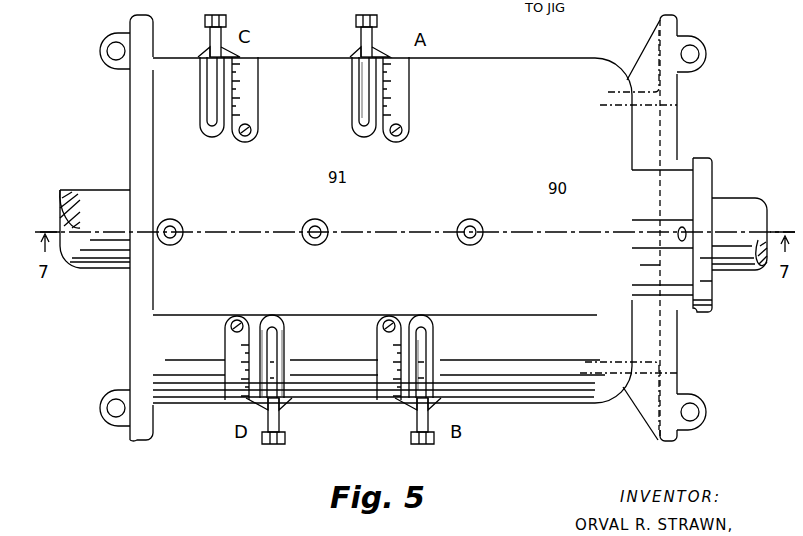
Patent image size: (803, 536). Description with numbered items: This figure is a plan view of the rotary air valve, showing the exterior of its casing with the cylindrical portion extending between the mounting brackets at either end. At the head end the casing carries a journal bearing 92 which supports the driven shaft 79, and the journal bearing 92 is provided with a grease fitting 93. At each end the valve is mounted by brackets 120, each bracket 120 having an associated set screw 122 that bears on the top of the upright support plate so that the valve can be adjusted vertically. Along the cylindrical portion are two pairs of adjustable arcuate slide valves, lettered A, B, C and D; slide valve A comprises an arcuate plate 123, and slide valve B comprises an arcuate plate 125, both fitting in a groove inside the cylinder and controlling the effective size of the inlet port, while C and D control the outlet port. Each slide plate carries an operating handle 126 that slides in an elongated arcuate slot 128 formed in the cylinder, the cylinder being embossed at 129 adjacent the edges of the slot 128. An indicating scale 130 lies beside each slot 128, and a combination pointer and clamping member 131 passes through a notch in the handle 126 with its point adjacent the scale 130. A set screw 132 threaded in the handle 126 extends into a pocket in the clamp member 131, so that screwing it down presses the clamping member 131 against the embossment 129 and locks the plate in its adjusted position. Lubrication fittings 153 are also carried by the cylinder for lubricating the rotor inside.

The driven shaft 79 is at (745, 205).
The journal bearing 92 is at (700, 298).
The grease fitting 93 is at (688, 226).
The bracket 120 is at (665, 340).
The set screw 122 is at (110, 48).
The arcuate plate 123 is at (366, 108).
The arcuate plate 125 is at (420, 352).
The operating handle 126 is at (212, 40).
The arcuate slot 128 is at (274, 336).
The embossment 129 is at (204, 113).
The indicating scale 130 is at (262, 126).
The pointer and clamping member 131 is at (240, 54).
The set screw 132 is at (210, 17).
The lubrication fitting 153 is at (312, 228).